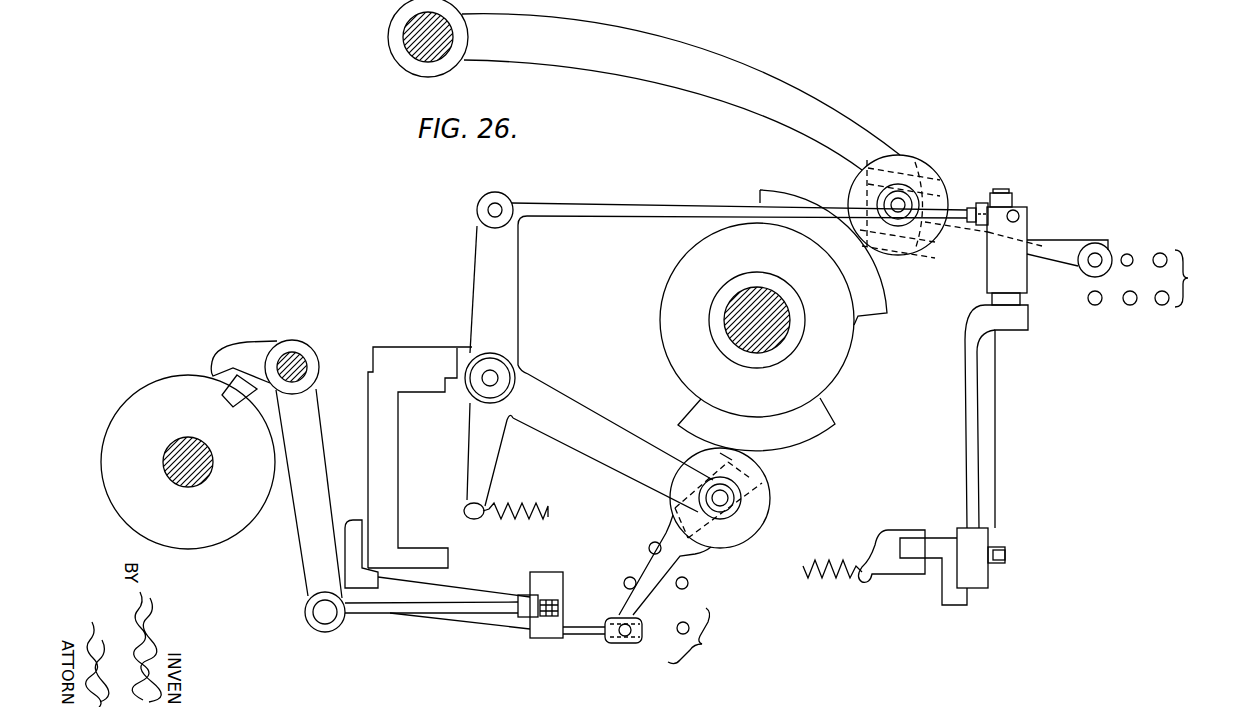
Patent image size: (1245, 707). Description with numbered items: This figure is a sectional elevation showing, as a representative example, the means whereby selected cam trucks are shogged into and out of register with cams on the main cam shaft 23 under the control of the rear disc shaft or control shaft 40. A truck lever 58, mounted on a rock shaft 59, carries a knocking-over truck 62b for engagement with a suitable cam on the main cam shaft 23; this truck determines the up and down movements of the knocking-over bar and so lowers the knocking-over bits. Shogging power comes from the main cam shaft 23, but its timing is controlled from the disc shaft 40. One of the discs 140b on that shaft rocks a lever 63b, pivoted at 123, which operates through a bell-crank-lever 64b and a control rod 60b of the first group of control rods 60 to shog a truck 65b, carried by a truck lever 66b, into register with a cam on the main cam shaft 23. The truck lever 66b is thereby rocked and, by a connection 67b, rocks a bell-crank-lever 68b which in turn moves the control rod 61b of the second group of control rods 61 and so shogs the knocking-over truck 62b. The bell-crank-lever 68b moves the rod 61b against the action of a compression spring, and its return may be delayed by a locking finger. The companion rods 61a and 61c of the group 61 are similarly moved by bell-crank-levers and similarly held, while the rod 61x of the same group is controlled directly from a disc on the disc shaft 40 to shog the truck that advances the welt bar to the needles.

The main cam shaft 23 is at (740, 318).
The disc shaft 40 is at (177, 447).
The truck lever 58 is at (713, 67).
The rock shaft 59 is at (412, 50).
The group of control rods 60 is at (671, 603).
The control rod 60b is at (625, 640).
The group of control rods 61 is at (1166, 278).
The control rod 61a is at (1130, 305).
The control rod 61b is at (1105, 253).
The control rod 61c is at (1167, 253).
The control rod 61x is at (1095, 305).
The knocking-over truck 62b is at (918, 162).
The lever 63b is at (305, 535).
The bell-crank-lever 64b is at (533, 608).
The truck 65b is at (765, 505).
The truck lever 66b is at (537, 387).
The connection 67b is at (565, 213).
The bell-crank-lever 68b is at (1048, 242).
The pivot 123 is at (287, 355).
The disc 140b is at (127, 413).